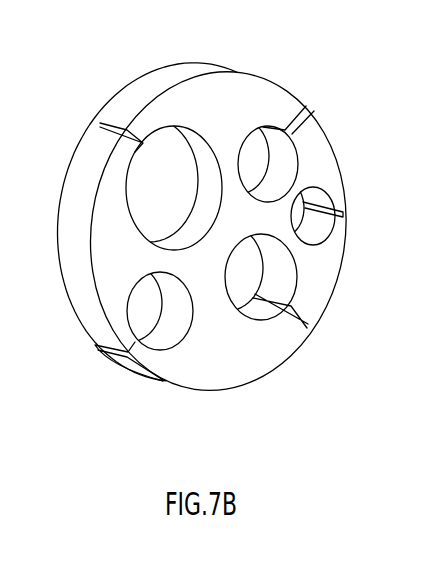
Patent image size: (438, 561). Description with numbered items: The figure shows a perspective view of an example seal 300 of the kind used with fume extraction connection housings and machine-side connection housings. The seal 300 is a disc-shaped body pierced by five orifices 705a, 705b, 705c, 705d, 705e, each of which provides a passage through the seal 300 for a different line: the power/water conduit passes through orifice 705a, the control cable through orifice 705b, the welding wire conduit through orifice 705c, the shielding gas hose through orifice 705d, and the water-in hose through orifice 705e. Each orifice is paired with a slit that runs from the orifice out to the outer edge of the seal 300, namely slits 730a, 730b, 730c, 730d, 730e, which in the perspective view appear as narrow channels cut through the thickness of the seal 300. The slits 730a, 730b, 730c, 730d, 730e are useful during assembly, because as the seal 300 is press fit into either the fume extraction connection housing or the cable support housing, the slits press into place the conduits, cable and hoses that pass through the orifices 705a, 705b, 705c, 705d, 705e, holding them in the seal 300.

The seal 300 is at (250, 73).
The orifice 705a is at (160, 124).
The orifice 705b is at (331, 236).
The orifice 705c is at (265, 320).
The orifice 705d is at (303, 148).
The orifice 705e is at (161, 352).
The slit 730a is at (100, 123).
The slit 730b is at (345, 213).
The slit 730c is at (310, 328).
The slit 730d is at (307, 109).
The slit 730e is at (94, 346).